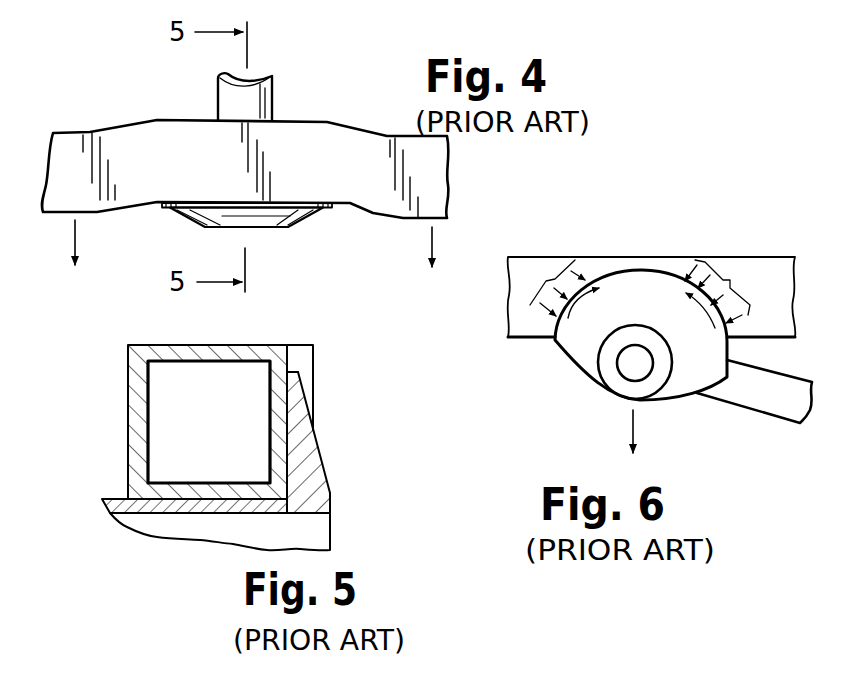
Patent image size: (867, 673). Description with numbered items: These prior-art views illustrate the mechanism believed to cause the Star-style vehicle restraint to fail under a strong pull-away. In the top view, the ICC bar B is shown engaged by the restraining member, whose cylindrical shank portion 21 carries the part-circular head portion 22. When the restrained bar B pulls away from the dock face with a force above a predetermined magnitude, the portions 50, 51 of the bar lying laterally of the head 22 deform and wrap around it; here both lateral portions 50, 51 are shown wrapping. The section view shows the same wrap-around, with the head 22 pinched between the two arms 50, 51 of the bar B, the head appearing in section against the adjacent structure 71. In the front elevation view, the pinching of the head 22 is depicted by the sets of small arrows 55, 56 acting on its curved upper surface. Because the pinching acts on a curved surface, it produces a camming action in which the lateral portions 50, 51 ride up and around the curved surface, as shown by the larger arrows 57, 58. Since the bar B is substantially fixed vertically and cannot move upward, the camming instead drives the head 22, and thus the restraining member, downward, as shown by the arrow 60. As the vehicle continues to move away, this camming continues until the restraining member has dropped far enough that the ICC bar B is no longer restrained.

In FIG. 4, the shank portion 21 is at (252, 105).
In FIG. 4, the head portion 22 is at (262, 226).
In FIG. 5, the head portion 22 is at (308, 465).
In FIG. 4, the lateral portion of the ICC bar 50 is at (86, 196).
In FIG. 4, the lateral portion of the ICC bar 51 is at (346, 176).
In FIG. 5, the lateral portion of the ICC bar 51 is at (300, 362).
In FIG. 5, the mounting plate 71 is at (225, 530).
In FIG. 5, the ICC bar B is at (220, 432).
In FIG. 6, the small arrows 55 is at (547, 281).
In FIG. 6, the small arrows 56 is at (730, 280).
In FIG. 6, the larger arrow 57 is at (583, 305).
In FIG. 6, the larger arrow 58 is at (694, 318).
In FIG. 6, the arrow 60 is at (635, 430).